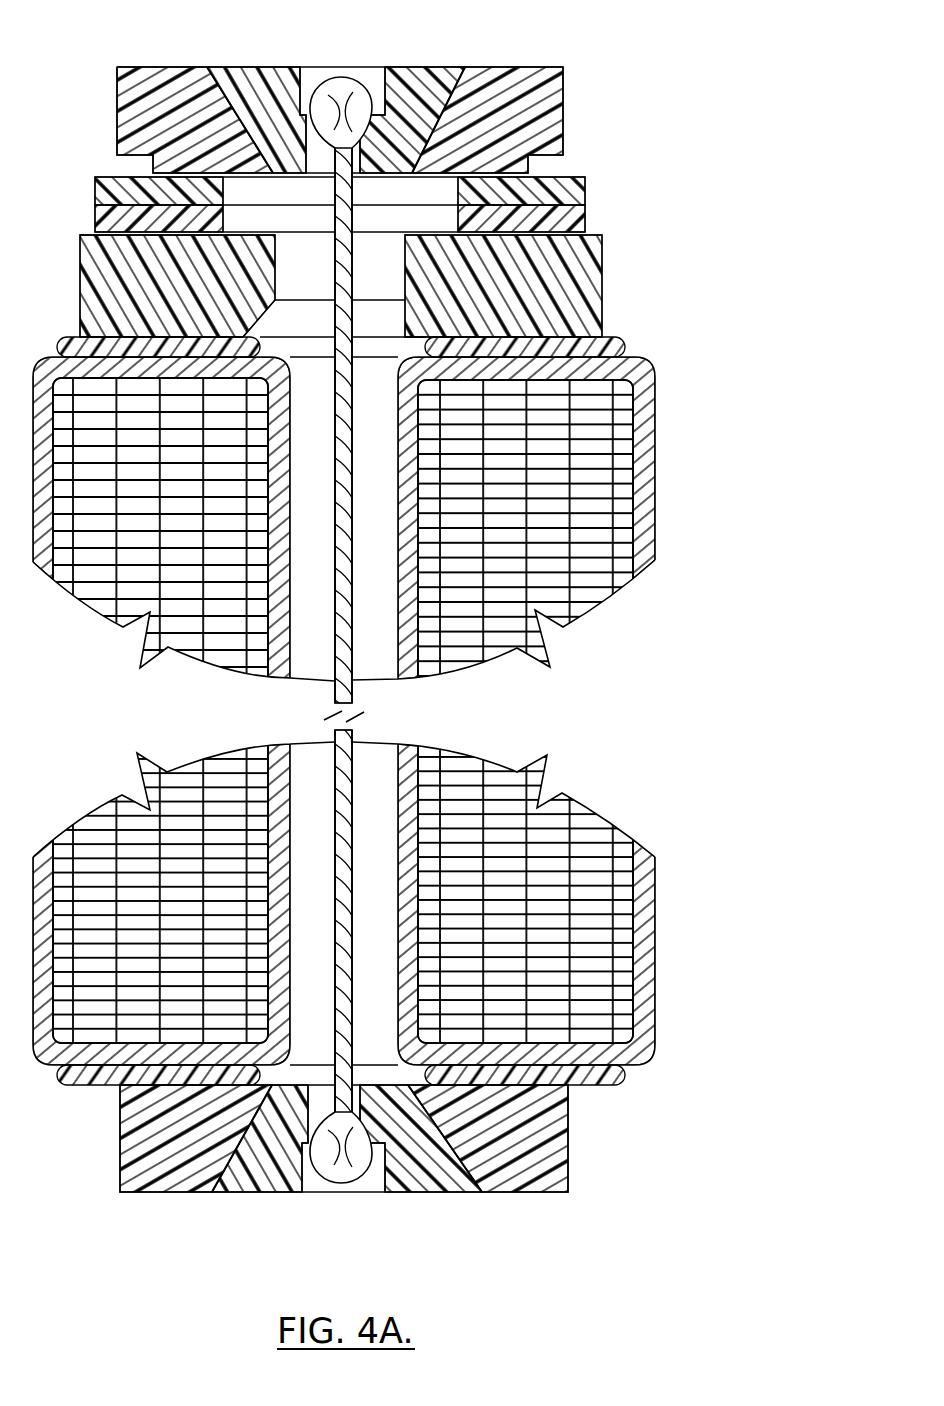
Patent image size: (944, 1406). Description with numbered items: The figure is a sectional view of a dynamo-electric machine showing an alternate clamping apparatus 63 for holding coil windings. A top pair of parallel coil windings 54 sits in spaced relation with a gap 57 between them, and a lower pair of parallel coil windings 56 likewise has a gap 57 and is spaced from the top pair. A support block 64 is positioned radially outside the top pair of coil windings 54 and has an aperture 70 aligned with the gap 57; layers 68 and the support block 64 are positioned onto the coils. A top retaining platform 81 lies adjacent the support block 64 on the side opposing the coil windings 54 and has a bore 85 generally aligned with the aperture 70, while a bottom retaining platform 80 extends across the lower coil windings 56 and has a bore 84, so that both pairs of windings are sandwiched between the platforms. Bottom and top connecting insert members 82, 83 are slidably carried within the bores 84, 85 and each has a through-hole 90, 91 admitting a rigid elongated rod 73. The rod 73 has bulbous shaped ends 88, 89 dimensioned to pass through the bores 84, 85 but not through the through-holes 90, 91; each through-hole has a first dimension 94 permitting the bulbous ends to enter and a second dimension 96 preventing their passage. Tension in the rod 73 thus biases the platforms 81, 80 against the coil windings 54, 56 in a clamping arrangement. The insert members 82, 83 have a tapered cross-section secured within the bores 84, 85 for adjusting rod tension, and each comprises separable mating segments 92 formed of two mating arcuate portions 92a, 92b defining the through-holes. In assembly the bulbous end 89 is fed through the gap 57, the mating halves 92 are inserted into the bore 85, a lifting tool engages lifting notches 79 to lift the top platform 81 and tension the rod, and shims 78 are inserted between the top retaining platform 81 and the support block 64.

The top pair of parallel coil windings 54 is at (397, 526).
The lower pair of parallel coil windings 56 is at (668, 945).
The gap 57 is at (315, 660).
The clamping apparatus 63 is at (483, 35).
The support block 64 is at (593, 265).
The layers 68 is at (598, 340).
The aperture 70 is at (312, 292).
The elongated rod 73 is at (360, 690).
The shims 78 is at (583, 207).
The lifting notches 79 is at (143, 163).
The bottom retaining platform 80 is at (416, 1173).
The top retaining platform 81 is at (361, 629).
The bottom connecting insert member 82 is at (437, 1183).
The top connecting insert member 83 is at (420, 67).
The bore 84 is at (243, 1180).
The bore 85 is at (243, 110).
The bulbous shaped end 88 is at (372, 973).
The bulbous shaped end 89 is at (322, 193).
The through-hole 90 is at (307, 1190).
The through-hole 91 is at (377, 72).
The separable mating segments 92 is at (222, 103).
The mating arcuate portion 92a is at (257, 147).
The mating arcuate portion 92b is at (458, 75).
The first dimension 94 is at (306, 70).
The second dimension 96 is at (355, 1080).